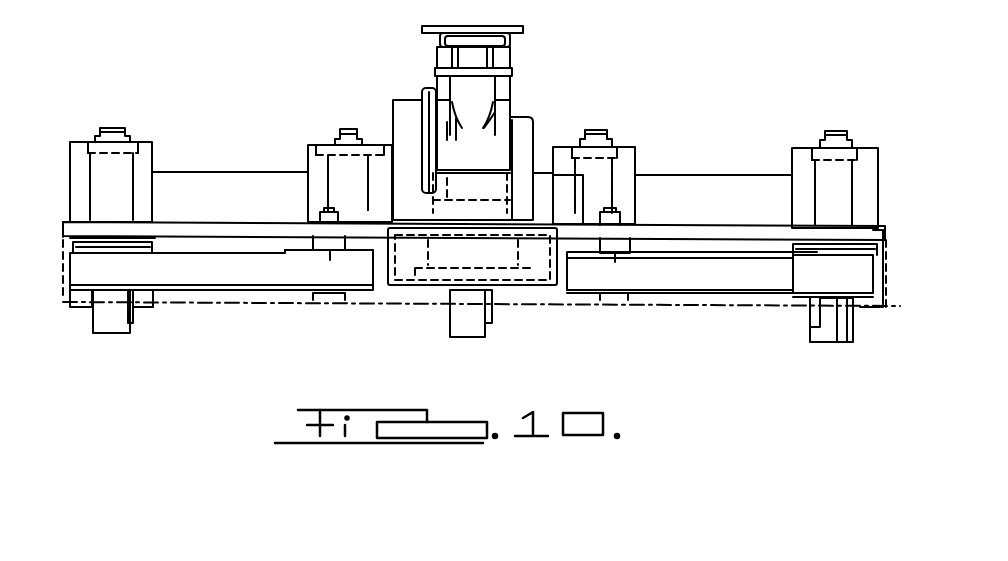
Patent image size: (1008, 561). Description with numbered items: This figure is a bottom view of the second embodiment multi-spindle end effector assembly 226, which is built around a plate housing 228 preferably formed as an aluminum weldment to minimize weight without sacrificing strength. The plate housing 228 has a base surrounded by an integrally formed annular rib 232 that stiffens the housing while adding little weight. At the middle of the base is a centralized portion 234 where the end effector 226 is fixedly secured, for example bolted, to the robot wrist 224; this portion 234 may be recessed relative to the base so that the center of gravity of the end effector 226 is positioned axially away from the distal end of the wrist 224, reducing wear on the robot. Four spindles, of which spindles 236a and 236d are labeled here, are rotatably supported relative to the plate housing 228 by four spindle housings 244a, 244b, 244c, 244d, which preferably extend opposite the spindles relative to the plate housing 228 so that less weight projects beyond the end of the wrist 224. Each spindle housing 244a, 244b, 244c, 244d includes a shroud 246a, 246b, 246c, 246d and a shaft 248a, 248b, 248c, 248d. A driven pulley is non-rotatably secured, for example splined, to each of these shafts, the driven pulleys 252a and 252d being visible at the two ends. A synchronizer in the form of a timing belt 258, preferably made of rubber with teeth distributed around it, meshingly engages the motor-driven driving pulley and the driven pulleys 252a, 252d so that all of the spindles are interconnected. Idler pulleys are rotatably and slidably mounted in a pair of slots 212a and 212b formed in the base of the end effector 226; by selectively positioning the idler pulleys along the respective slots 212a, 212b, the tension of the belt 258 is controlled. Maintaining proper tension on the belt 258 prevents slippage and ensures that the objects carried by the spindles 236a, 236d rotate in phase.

The slot 212a is at (287, 293).
The slot 212b is at (593, 297).
The wrist 224 is at (506, 102).
The end effector assembly 226 is at (892, 305).
The plate housing 228 is at (760, 233).
The annular rib 232 is at (722, 185).
The centralized portion 234 is at (542, 273).
The spindle 236a is at (119, 327).
The spindle 236d is at (828, 337).
The spindle housing 244a is at (110, 127).
The spindle housing 244b is at (350, 128).
The spindle housing 244c is at (586, 133).
The spindle housing 244d is at (822, 132).
The shroud 246a is at (80, 157).
The shroud 246b is at (307, 163).
The shroud 246c is at (633, 147).
The shroud 246d is at (867, 157).
The shaft 248a is at (128, 167).
The shaft 248b is at (318, 150).
The shaft 248c is at (636, 160).
The shaft 248d is at (822, 200).
The driven pulley 252a is at (83, 293).
The driven pulley 252d is at (837, 347).
The timing belt 258 is at (710, 280).